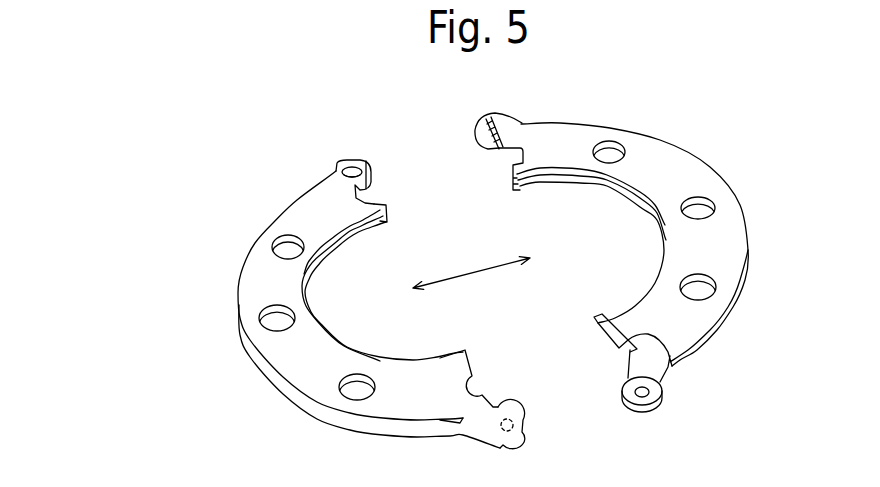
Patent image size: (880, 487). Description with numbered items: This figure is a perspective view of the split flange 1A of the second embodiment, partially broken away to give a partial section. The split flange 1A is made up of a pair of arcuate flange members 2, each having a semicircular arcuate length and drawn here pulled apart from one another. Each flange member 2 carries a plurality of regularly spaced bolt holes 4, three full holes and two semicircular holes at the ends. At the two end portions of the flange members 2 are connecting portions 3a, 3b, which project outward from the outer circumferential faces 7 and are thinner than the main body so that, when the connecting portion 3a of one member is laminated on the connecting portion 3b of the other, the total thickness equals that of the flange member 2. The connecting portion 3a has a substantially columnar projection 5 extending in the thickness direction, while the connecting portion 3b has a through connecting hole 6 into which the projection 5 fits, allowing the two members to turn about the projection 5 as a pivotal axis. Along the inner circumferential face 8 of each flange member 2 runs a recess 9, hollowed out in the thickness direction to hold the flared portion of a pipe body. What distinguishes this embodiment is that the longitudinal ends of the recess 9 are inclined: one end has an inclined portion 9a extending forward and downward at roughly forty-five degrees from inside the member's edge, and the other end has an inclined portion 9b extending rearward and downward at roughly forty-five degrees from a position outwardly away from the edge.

The split flange 1A is at (790, 182).
The flange member 2 is at (276, 194).
The connecting portion 3a is at (526, 418).
The connecting portion 3b is at (372, 176).
The bolt hole 4 is at (272, 250).
The projection 5 is at (508, 433).
The connecting hole 6 is at (344, 169).
The outer circumferential face 7 is at (392, 437).
The inner circumferential face 8 is at (322, 272).
The recess 9 is at (385, 226).
The inclined portion 9a is at (508, 185).
The inclined portion 9b is at (391, 212).